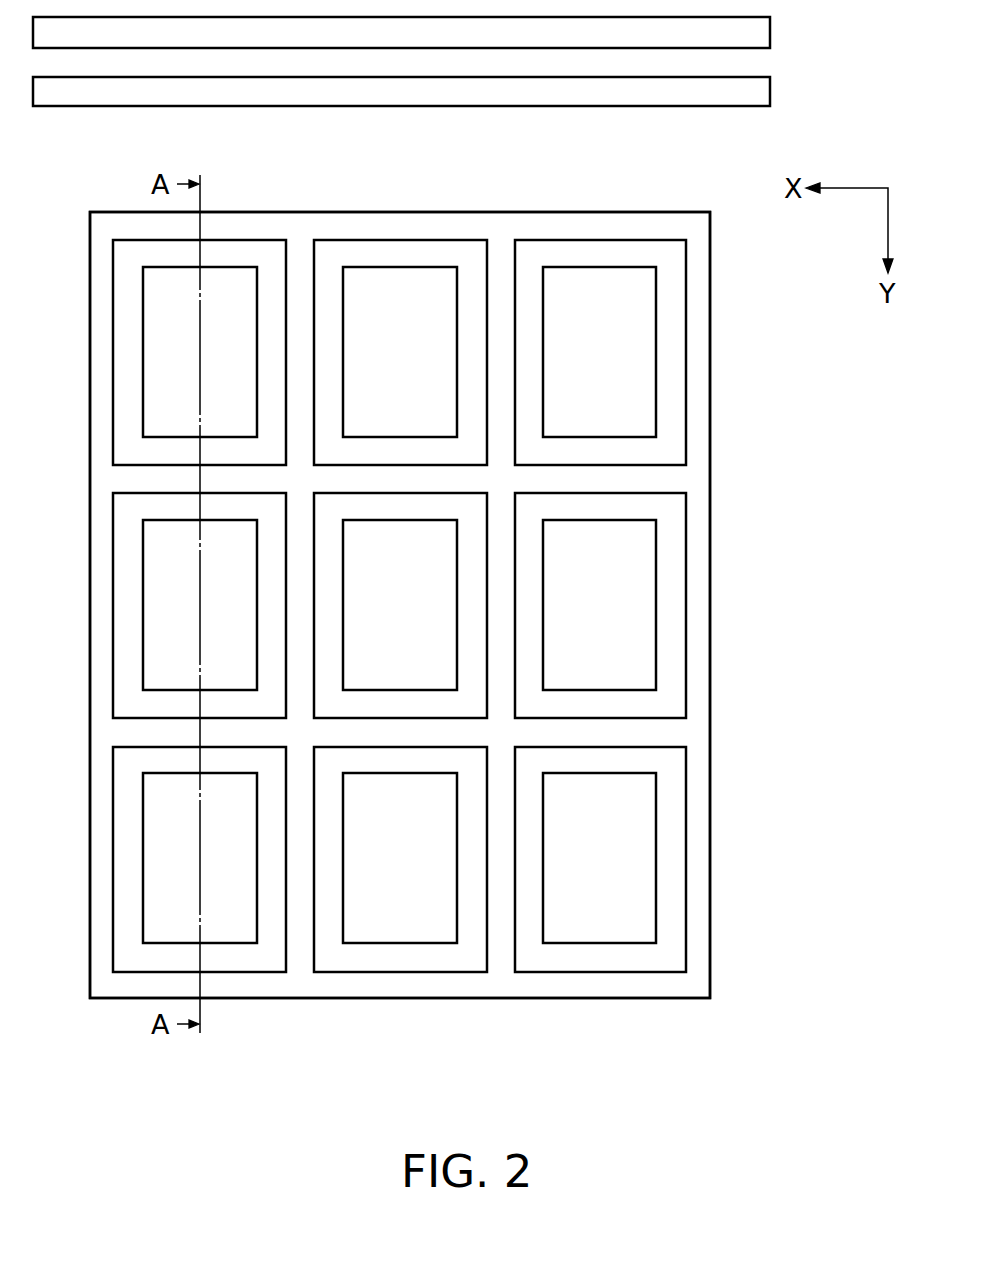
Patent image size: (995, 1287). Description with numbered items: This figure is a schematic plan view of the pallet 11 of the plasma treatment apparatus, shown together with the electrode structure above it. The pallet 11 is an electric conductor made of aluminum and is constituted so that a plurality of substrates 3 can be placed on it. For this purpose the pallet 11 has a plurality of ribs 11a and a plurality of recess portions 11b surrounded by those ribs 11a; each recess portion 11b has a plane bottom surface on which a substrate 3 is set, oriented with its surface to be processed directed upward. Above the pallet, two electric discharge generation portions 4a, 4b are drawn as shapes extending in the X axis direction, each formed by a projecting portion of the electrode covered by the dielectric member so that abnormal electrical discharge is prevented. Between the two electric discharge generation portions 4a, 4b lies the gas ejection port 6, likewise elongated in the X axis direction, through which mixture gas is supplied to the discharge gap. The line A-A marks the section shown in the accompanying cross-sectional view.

The electric discharge generation portion 4a is at (760, 33).
The gas ejection port 6 is at (760, 62).
The electric discharge generation portion 4b is at (760, 93).
The pallet 11 is at (706, 184).
The rib 11a is at (695, 418).
The recess portion 11b is at (672, 372).
The substrate 3 is at (642, 867).